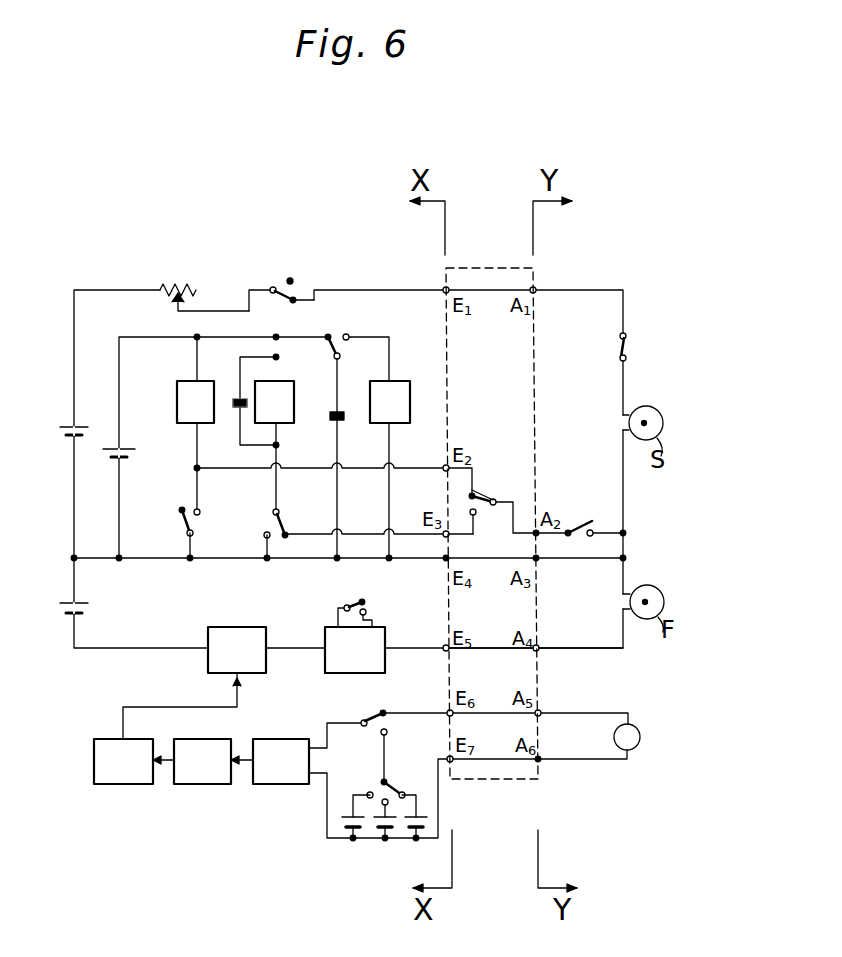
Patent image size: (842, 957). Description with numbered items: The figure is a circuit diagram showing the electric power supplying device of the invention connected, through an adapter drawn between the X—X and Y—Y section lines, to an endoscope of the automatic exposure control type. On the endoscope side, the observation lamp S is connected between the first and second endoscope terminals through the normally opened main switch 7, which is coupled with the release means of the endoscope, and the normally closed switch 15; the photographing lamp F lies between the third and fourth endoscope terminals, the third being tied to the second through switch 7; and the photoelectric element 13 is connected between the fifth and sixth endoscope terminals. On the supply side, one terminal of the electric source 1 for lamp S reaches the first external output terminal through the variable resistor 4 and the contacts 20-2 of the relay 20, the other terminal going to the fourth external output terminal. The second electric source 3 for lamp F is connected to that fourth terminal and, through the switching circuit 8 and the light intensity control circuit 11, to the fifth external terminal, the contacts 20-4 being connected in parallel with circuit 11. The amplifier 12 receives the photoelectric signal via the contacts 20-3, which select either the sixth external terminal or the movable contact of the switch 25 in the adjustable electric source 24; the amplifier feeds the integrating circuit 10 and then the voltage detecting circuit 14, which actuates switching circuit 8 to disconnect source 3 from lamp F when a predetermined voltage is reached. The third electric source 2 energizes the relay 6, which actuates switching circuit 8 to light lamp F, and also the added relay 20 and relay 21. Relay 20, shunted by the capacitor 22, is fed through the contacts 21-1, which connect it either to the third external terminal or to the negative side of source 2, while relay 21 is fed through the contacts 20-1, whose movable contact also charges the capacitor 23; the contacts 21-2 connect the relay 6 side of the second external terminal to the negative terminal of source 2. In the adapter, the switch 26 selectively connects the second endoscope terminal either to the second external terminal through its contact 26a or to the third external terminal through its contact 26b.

The electric source 1 is at (87, 430).
The third electric source 2 is at (133, 453).
The second electric source 3 is at (90, 608).
The variable resistor 4 is at (180, 283).
The relay 6 is at (195, 402).
The main switch 7 is at (580, 527).
The switching circuit 8 is at (237, 650).
The integrating circuit 10 is at (202, 761).
The light intensity control circuit 11 is at (355, 650).
The amplifier 12 is at (281, 761).
The photoelectric element 13 is at (636, 747).
The voltage detecting circuit 14 is at (123, 761).
The normally closed switch 15 is at (628, 343).
The relay 20 is at (274, 402).
The contacts of relay 20 20-1 is at (341, 330).
The contacts of relay 20 20-2 is at (293, 276).
The contacts of relay 20 20-3 is at (375, 709).
The contacts of relay 20 20-4 is at (356, 598).
The relay 21 is at (390, 402).
The contacts of relay 21 21-1 is at (305, 529).
The contacts of relay 21 21-2 is at (219, 532).
The capacitor 22 is at (237, 397).
The capacitor 23 is at (329, 409).
The electric source of adjustable voltage 24 is at (377, 830).
The switch 25 is at (390, 776).
The switch 26 is at (484, 478).
The contact of switch 26 26a is at (498, 477).
The contact of switch 26 26b is at (479, 515).